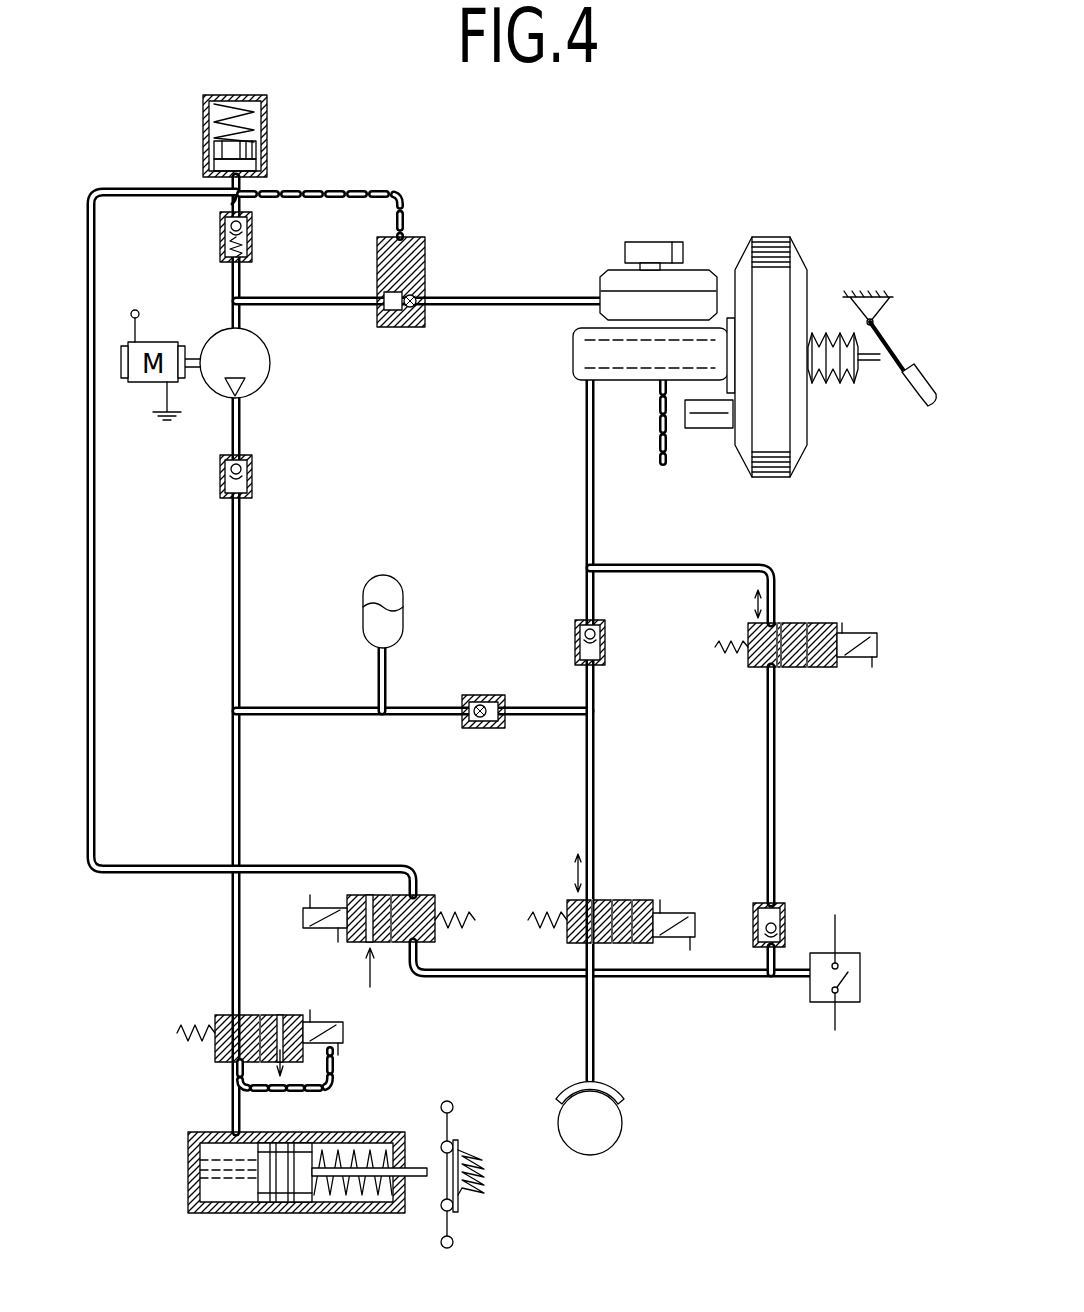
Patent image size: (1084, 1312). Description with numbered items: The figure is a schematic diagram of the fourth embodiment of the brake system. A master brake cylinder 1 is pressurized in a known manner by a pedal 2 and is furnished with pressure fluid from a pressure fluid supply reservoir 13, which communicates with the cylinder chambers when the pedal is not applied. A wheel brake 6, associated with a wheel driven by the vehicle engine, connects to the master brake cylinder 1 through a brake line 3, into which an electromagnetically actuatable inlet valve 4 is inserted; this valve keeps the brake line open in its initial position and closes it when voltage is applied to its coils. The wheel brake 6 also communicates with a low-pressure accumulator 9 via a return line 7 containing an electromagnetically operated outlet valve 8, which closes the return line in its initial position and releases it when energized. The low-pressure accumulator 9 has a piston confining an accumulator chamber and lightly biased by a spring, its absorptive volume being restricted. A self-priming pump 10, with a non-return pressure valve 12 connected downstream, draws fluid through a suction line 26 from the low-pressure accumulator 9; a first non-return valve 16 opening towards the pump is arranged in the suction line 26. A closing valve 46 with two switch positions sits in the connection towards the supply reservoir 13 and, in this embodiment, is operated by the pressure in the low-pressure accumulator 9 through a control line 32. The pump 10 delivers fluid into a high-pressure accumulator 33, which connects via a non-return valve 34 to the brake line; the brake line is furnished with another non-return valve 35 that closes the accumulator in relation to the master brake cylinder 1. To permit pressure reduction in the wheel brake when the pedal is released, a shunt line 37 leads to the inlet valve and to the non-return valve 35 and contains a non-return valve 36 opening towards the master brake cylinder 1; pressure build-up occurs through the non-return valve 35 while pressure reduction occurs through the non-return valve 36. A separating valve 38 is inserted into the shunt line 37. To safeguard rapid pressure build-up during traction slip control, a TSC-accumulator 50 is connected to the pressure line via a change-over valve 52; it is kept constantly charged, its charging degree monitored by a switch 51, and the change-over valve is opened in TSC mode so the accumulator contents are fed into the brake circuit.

The master brake cylinder 1 is at (634, 394).
The pedal 2 is at (918, 405).
The brake line 3 is at (596, 498).
The inlet valve 4 is at (567, 902).
The wheel brake 6 is at (615, 1092).
The return line 7 is at (176, 850).
The outlet valve 8 is at (430, 895).
The low-pressure accumulator 9 is at (267, 128).
The pump 10 is at (265, 378).
The non-return pressure valve 12 is at (252, 480).
The pressure fluid supply reservoir 13 is at (606, 272).
The first non-return valve 16 is at (220, 242).
The suction line 26 is at (228, 205).
The control line 32 is at (327, 190).
The high-pressure accumulator 33 is at (388, 586).
The non-return valve 34 is at (492, 695).
The non-return valve 35 is at (573, 632).
The non-return valve 36 is at (785, 910).
The shunt line 37 is at (776, 744).
The separating valve 38 is at (796, 623).
The closing valve 46 is at (425, 278).
The TSC-accumulator 50 is at (190, 1210).
The switch 51 is at (468, 1208).
The change-over valve 52 is at (220, 1015).